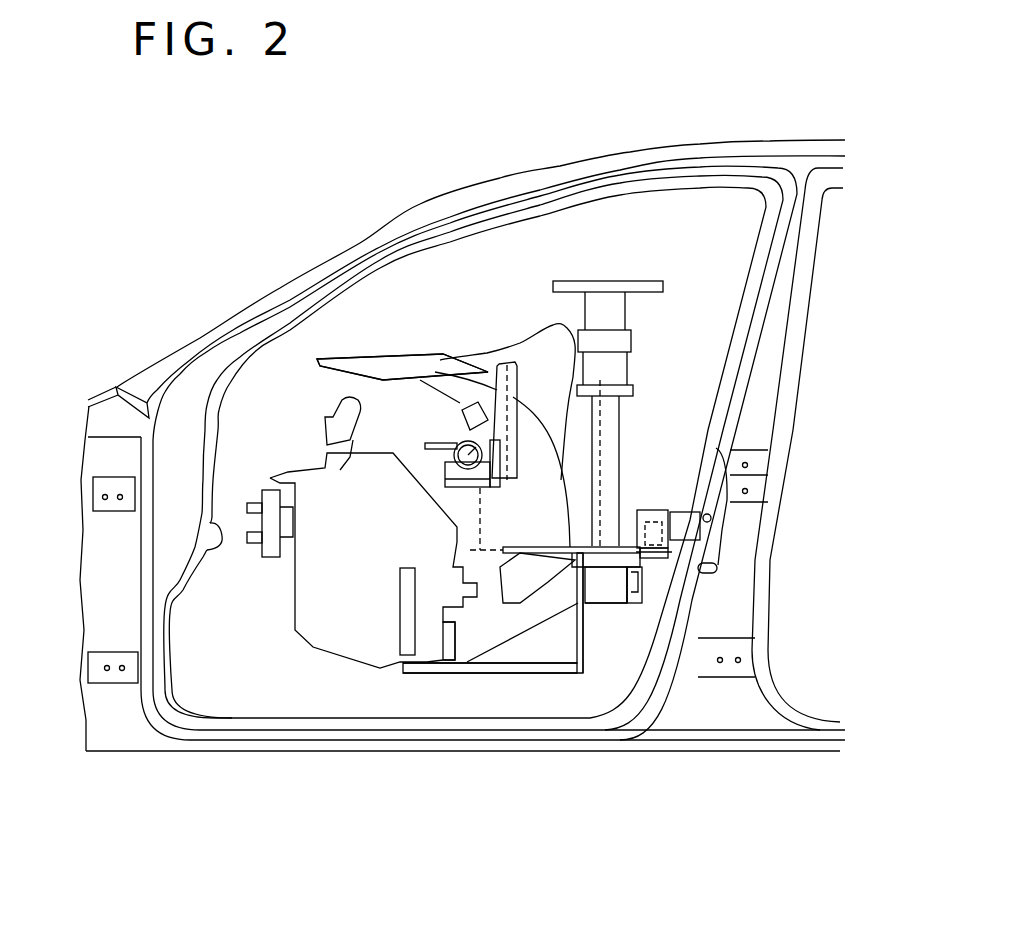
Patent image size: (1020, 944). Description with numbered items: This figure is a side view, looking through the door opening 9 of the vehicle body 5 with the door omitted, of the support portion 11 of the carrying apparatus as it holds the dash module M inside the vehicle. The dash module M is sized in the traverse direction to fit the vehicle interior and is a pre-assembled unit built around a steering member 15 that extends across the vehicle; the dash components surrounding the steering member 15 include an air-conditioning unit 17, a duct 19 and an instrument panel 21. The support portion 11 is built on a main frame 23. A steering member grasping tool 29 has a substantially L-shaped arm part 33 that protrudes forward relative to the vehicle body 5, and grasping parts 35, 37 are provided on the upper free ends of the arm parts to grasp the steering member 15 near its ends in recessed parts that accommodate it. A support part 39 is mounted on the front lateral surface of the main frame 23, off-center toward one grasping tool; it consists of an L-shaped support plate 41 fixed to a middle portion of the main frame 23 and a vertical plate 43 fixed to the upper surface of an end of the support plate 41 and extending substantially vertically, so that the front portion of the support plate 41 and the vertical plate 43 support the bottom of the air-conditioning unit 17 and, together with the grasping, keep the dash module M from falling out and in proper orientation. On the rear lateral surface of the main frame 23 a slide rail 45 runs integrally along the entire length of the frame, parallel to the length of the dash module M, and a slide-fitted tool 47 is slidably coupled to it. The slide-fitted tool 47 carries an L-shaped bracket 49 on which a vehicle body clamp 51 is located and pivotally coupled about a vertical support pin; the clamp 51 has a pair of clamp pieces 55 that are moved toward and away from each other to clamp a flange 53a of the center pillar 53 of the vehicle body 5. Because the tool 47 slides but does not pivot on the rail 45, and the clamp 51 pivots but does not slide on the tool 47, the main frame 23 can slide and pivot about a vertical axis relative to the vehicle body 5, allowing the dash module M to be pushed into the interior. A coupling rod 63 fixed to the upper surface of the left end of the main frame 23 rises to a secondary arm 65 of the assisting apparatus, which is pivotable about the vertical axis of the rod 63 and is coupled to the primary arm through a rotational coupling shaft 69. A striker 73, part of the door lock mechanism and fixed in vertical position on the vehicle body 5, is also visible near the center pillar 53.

The vehicle body 5 is at (453, 190).
The door opening 9 is at (210, 540).
The support portion 11 is at (596, 608).
The steering member 15 is at (446, 412).
The air-conditioning unit 17 is at (317, 633).
The duct 19 is at (327, 443).
The instrument panel 21 is at (378, 356).
The main frame 23 is at (643, 640).
The steering member grasping tool 29 is at (562, 545).
The arm part 33 is at (557, 542).
The grasping part 35 is at (506, 362).
The grasping part 37 is at (447, 473).
The support part 39 is at (470, 678).
The L-shaped support plate 41 is at (513, 672).
The vertical plate 43 is at (447, 660).
The slide rail 45 is at (630, 580).
The slide-fitted tool 47 is at (627, 605).
The L-shaped bracket 49 is at (645, 585).
The vehicle body clamp 51 is at (706, 536).
The center pillar 53 is at (765, 403).
The flange 53a is at (708, 473).
The clamp pieces 55 is at (712, 518).
The coupling rod 63 is at (617, 417).
The secondary arm 65 is at (617, 370).
The rotational coupling shaft 69 is at (630, 305).
The striker 73 is at (703, 573).
The dash module M is at (328, 350).